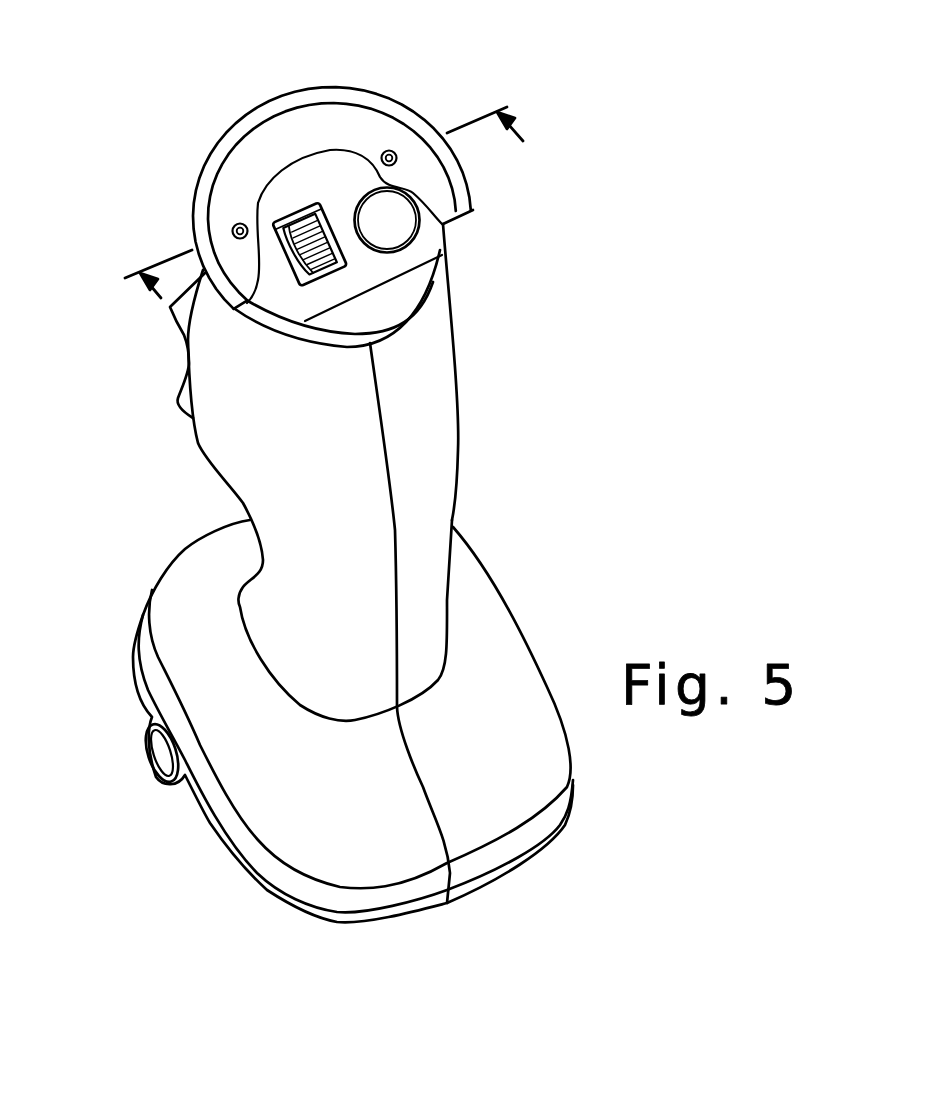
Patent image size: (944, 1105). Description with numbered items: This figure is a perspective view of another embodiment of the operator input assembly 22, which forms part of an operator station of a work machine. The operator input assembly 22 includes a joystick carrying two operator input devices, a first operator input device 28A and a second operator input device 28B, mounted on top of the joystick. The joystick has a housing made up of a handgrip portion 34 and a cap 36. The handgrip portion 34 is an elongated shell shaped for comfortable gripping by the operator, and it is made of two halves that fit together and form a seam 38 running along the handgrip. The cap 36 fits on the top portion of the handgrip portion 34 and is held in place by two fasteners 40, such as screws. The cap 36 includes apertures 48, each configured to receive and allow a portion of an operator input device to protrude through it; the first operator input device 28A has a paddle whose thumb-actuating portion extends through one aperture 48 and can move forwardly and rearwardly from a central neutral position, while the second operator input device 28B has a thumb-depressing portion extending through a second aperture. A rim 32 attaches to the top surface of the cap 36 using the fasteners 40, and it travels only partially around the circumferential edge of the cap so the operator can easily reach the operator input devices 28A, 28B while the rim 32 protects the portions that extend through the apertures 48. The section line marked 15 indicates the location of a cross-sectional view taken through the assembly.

The section line 15 is at (335, 210).
The operator input assembly 22 is at (580, 418).
The first operator input device 28A is at (302, 194).
The second operator input device 28B is at (413, 247).
The rim 32 is at (210, 167).
The handgrip portion 34 is at (243, 472).
The cap 36 is at (393, 306).
The seam 38 is at (395, 583).
The fasteners 40 is at (233, 229).
The apertures 48 is at (273, 213).